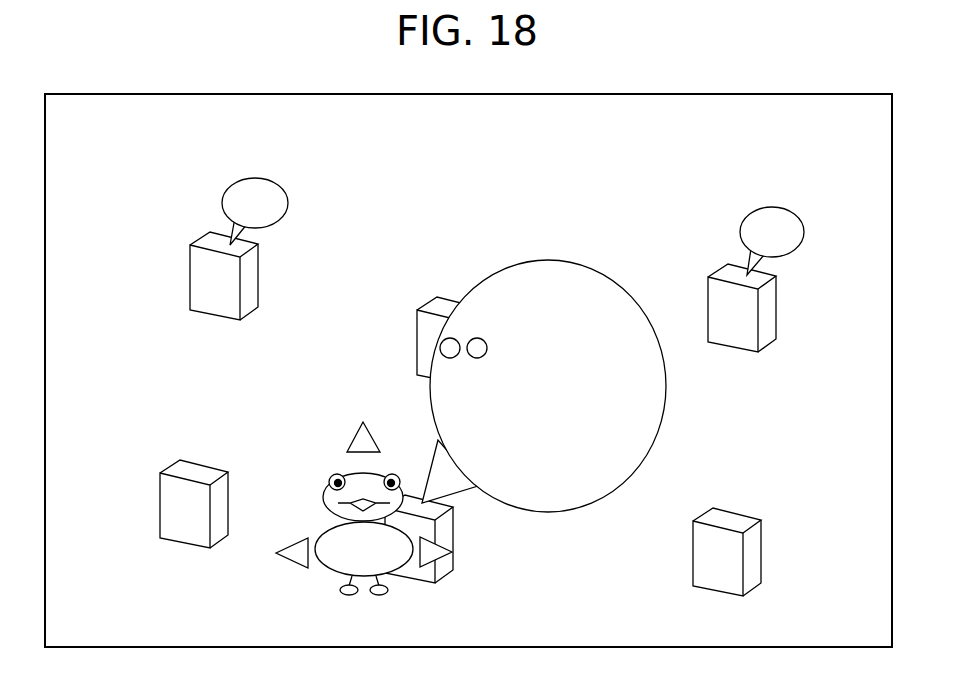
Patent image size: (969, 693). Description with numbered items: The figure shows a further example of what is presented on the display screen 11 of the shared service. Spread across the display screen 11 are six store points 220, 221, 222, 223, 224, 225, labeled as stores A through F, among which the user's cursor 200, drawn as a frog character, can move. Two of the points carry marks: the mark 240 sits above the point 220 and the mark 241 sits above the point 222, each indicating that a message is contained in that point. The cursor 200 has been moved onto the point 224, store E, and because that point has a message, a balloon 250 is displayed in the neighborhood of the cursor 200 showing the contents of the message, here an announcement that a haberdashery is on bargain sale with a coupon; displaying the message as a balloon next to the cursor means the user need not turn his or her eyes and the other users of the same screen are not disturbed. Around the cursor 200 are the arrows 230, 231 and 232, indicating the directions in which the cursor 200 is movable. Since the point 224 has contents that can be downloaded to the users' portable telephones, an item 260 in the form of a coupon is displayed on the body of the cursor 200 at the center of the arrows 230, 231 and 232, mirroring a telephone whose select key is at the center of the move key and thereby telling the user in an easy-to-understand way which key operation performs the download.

The display screen 11 is at (635, 94).
The cursor 200 is at (323, 488).
The point 220 is at (190, 277).
The point 221 is at (417, 340).
The point 222 is at (775, 310).
The point 223 is at (160, 503).
The point 224 is at (455, 542).
The point 225 is at (760, 553).
The arrow 230 is at (352, 438).
The arrow 231 is at (448, 568).
The arrow 232 is at (302, 537).
The mark 240 is at (238, 182).
The mark 241 is at (750, 212).
The balloon 250 is at (661, 421).
The item 260 is at (328, 577).